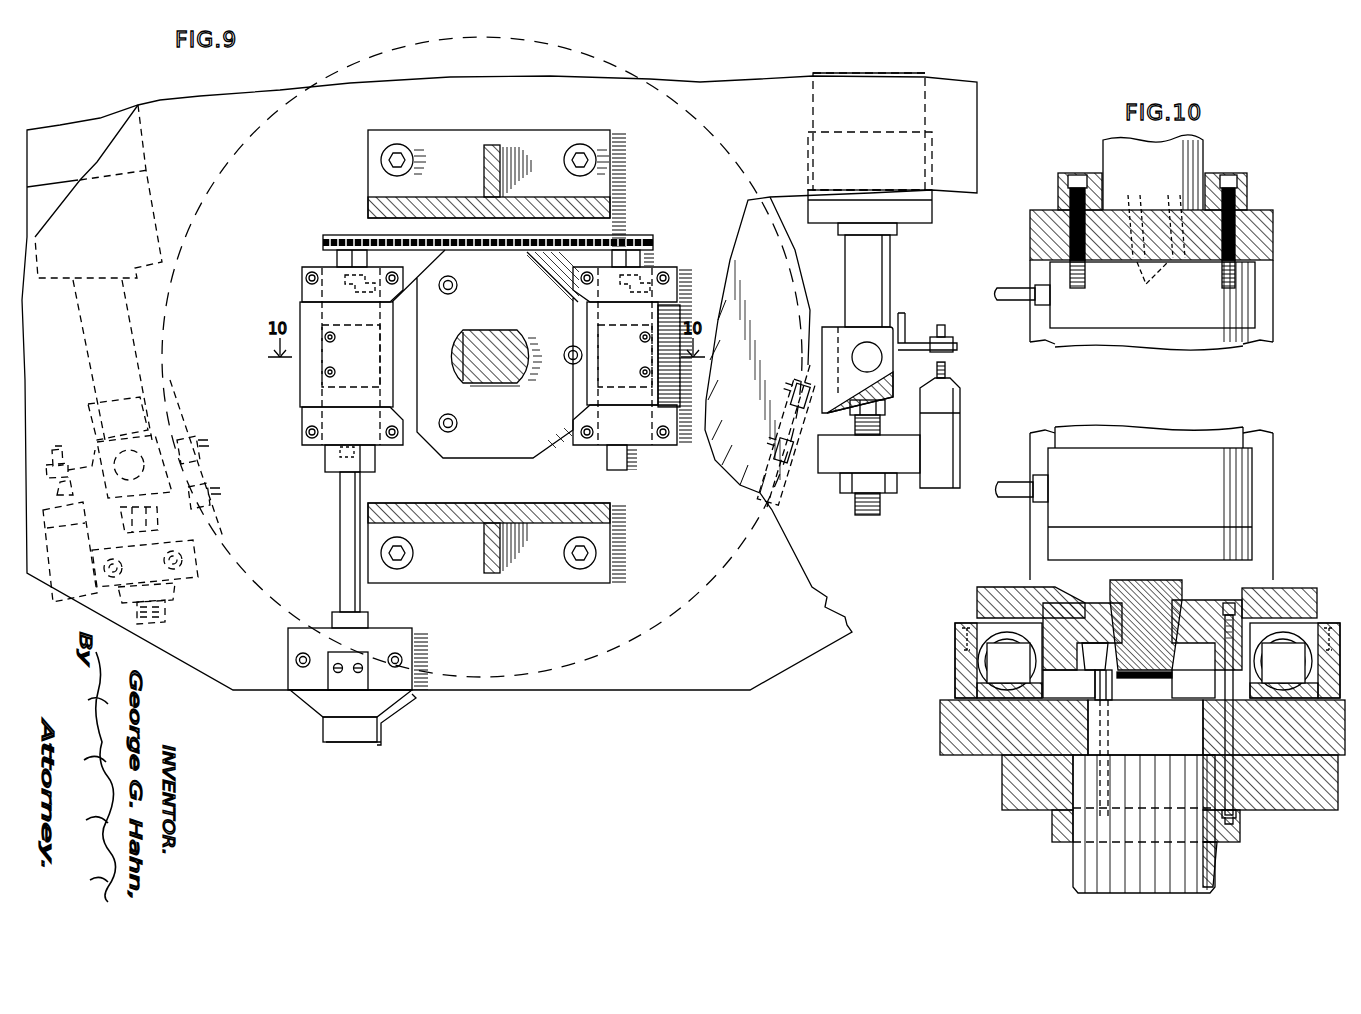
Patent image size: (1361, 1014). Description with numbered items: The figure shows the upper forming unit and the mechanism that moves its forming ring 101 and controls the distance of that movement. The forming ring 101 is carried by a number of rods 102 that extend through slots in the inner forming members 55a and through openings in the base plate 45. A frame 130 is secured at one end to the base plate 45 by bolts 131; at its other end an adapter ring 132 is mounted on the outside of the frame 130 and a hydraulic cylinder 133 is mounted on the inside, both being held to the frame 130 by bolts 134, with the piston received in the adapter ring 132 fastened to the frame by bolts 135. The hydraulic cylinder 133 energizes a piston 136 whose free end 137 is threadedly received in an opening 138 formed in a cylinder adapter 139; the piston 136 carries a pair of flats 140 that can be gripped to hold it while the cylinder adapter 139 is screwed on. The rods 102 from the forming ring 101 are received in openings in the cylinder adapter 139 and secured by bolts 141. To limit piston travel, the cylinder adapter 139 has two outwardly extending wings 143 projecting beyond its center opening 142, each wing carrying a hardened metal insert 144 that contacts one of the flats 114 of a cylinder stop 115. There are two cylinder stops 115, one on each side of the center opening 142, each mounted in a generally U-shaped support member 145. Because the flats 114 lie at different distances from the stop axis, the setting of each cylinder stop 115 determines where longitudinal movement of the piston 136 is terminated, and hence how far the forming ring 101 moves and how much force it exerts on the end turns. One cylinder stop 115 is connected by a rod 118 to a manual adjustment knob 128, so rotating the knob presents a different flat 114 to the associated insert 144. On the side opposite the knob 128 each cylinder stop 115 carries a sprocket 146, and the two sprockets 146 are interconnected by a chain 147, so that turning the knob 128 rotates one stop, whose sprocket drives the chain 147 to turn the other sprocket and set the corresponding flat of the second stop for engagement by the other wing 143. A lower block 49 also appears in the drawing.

In FIG. 9, the base plate 45 is at (648, 691).
In FIG. 10, the base plate 45 is at (1203, 170).
In FIG. 10, the lower support block 49 is at (1022, 787).
In FIG. 10, the inner forming members 55a is at (1310, 790).
In FIG. 10, the forming ring 101 is at (1241, 836).
In FIG. 10, the rods 102 is at (1238, 810).
In FIG. 9, the flats 114 is at (683, 318).
In FIG. 10, the flats 114 is at (990, 676).
In FIG. 9, the cylinder stop 115 is at (330, 457).
In FIG. 9, the rod 118 is at (340, 509).
In FIG. 9, the manual adjustment knob 128 is at (395, 712).
In FIG. 10, the frame 130 is at (1262, 320).
In FIG. 9, the bolts 131 is at (413, 158).
In FIG. 10, the adapter ring 132 is at (1250, 200).
In FIG. 10, the hydraulic cylinder 133 is at (1256, 303).
In FIG. 10, the bolts 134 is at (1075, 178).
In FIG. 10, the bolts 135 is at (1150, 282).
In FIG. 9, the piston 136 is at (475, 356).
In FIG. 10, the piston 136 is at (1182, 590).
In FIG. 10, the free end 137 is at (1144, 781).
In FIG. 10, the opening 138 is at (1127, 673).
In FIG. 9, the cylinder adapter 139 is at (499, 459).
In FIG. 10, the cylinder adapter 139 is at (1095, 602).
In FIG. 9, the flats 140 is at (490, 330).
In FIG. 9, the bolts 141 is at (457, 283).
In FIG. 10, the bolts 141 is at (1231, 603).
In FIG. 10, the center opening 142 is at (1172, 723).
In FIG. 9, the wings 143 is at (330, 392).
In FIG. 9, the hardened metal insert 144 is at (362, 328).
In FIG. 10, the hardened metal insert 144 is at (1005, 625).
In FIG. 9, the U-shaped support member 145 is at (300, 426).
In FIG. 9, the sprocket 146 is at (337, 257).
In FIG. 9, the chain 147 is at (348, 240).